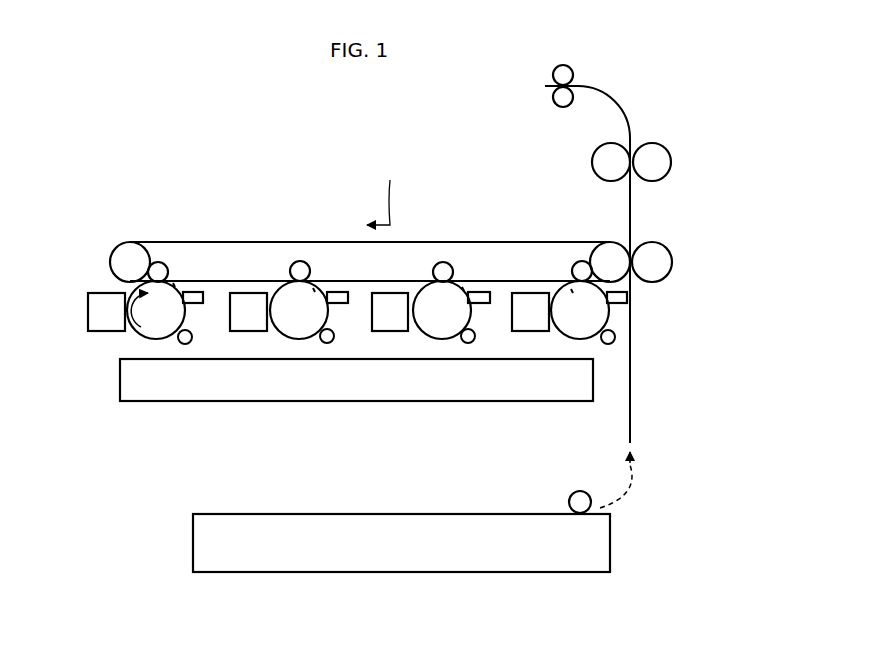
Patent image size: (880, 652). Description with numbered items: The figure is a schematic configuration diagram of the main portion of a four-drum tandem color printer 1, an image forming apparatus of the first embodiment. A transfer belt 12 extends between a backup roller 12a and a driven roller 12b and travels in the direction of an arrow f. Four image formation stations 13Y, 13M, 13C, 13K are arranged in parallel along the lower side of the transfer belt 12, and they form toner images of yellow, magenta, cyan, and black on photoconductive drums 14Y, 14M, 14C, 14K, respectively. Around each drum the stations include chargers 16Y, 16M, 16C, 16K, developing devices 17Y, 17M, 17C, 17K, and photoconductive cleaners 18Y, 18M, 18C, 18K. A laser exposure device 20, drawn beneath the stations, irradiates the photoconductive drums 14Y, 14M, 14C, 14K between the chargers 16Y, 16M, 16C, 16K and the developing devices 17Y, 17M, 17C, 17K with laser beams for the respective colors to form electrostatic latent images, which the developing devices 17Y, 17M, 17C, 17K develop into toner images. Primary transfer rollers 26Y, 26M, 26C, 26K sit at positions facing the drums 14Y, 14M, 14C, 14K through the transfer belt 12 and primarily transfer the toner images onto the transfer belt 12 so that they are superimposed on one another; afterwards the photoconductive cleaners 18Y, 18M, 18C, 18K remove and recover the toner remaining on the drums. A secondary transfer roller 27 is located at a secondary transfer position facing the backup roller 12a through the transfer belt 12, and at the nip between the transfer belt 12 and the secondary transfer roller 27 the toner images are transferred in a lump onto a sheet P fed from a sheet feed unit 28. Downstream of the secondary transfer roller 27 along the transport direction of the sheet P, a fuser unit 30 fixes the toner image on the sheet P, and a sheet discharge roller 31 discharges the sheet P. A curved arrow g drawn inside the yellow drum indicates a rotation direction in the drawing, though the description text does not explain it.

The color printer 1 is at (722, 376).
The transfer belt 12 is at (215, 242).
The backup roller 12a is at (618, 240).
The driven roller 12b is at (127, 253).
The image formation station 13Y is at (97, 277).
The image formation station 13M is at (277, 282).
The image formation station 13C is at (422, 282).
The image formation station 13K is at (620, 320).
The photoconductive drum 14Y is at (173, 285).
The photoconductive drum 14M is at (313, 290).
The photoconductive drum 14C is at (463, 288).
The photoconductive drum 14K is at (572, 292).
The charger 16Y is at (192, 338).
The charger 16M is at (333, 338).
The charger 16C is at (473, 338).
The charger 16K is at (615, 342).
The developing device 17Y is at (88, 313).
The developing device 17M is at (248, 300).
The developing device 17C is at (392, 300).
The developing device 17K is at (527, 298).
The photoconductive cleaner 18Y is at (188, 292).
The photoconductive cleaner 18M is at (347, 272).
The photoconductive cleaner 18C is at (477, 292).
The photoconductive cleaner 18K is at (632, 298).
The laser exposure device 20 is at (118, 379).
The primary transfer roller 26Y is at (157, 263).
The primary transfer roller 26M is at (300, 265).
The primary transfer roller 26C is at (443, 262).
The primary transfer roller 26K is at (583, 262).
The secondary transfer roller 27 is at (672, 262).
The sheet feed unit 28 is at (192, 540).
The fuser unit 30 is at (672, 162).
The sheet discharge roller 31 is at (575, 73).
The sheet P is at (632, 402).
The arrow f is at (380, 193).
The drum rotation direction g is at (135, 292).